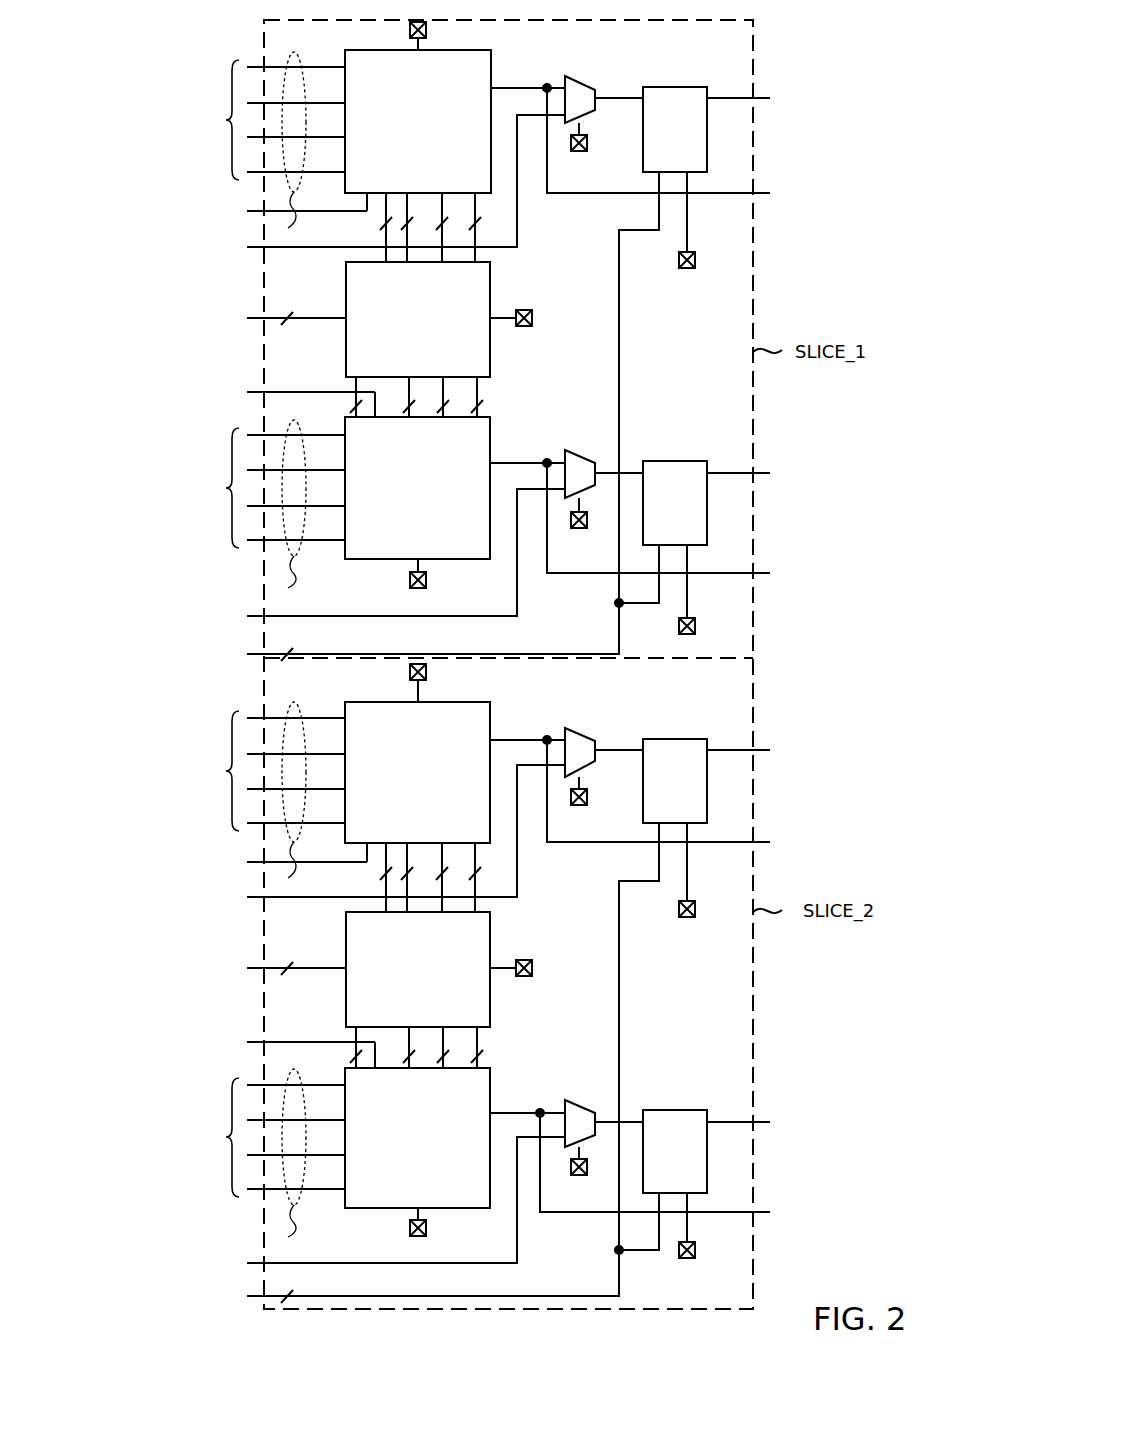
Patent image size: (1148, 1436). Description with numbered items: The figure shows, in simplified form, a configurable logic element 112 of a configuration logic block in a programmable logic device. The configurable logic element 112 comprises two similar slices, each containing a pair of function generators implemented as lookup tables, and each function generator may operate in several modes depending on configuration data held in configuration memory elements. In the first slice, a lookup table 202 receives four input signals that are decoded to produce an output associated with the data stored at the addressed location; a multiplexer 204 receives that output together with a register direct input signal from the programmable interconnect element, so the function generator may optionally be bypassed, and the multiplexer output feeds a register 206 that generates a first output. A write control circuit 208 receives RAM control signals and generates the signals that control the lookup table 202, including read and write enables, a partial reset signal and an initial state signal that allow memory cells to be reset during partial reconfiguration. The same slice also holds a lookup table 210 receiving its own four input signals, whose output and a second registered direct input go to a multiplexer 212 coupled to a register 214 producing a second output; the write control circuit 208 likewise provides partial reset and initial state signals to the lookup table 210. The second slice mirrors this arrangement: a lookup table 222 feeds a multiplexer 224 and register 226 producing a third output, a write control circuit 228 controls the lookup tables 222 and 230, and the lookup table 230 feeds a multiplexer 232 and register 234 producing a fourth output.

The configurable logic element 112 is at (826, 1296).
The lookup table 202 is at (345, 62).
The multiplexer 204 is at (600, 66).
The register 206 is at (678, 87).
The write control circuit 208 is at (346, 354).
The lookup table 210 is at (492, 428).
The multiplexer 212 is at (580, 450).
The register 214 is at (676, 461).
The lookup table 222 is at (345, 712).
The multiplexer 224 is at (585, 729).
The register 226 is at (676, 739).
The write control circuit 228 is at (346, 1004).
The lookup table 230 is at (345, 1072).
The multiplexer 232 is at (580, 1100).
The register 234 is at (676, 1110).